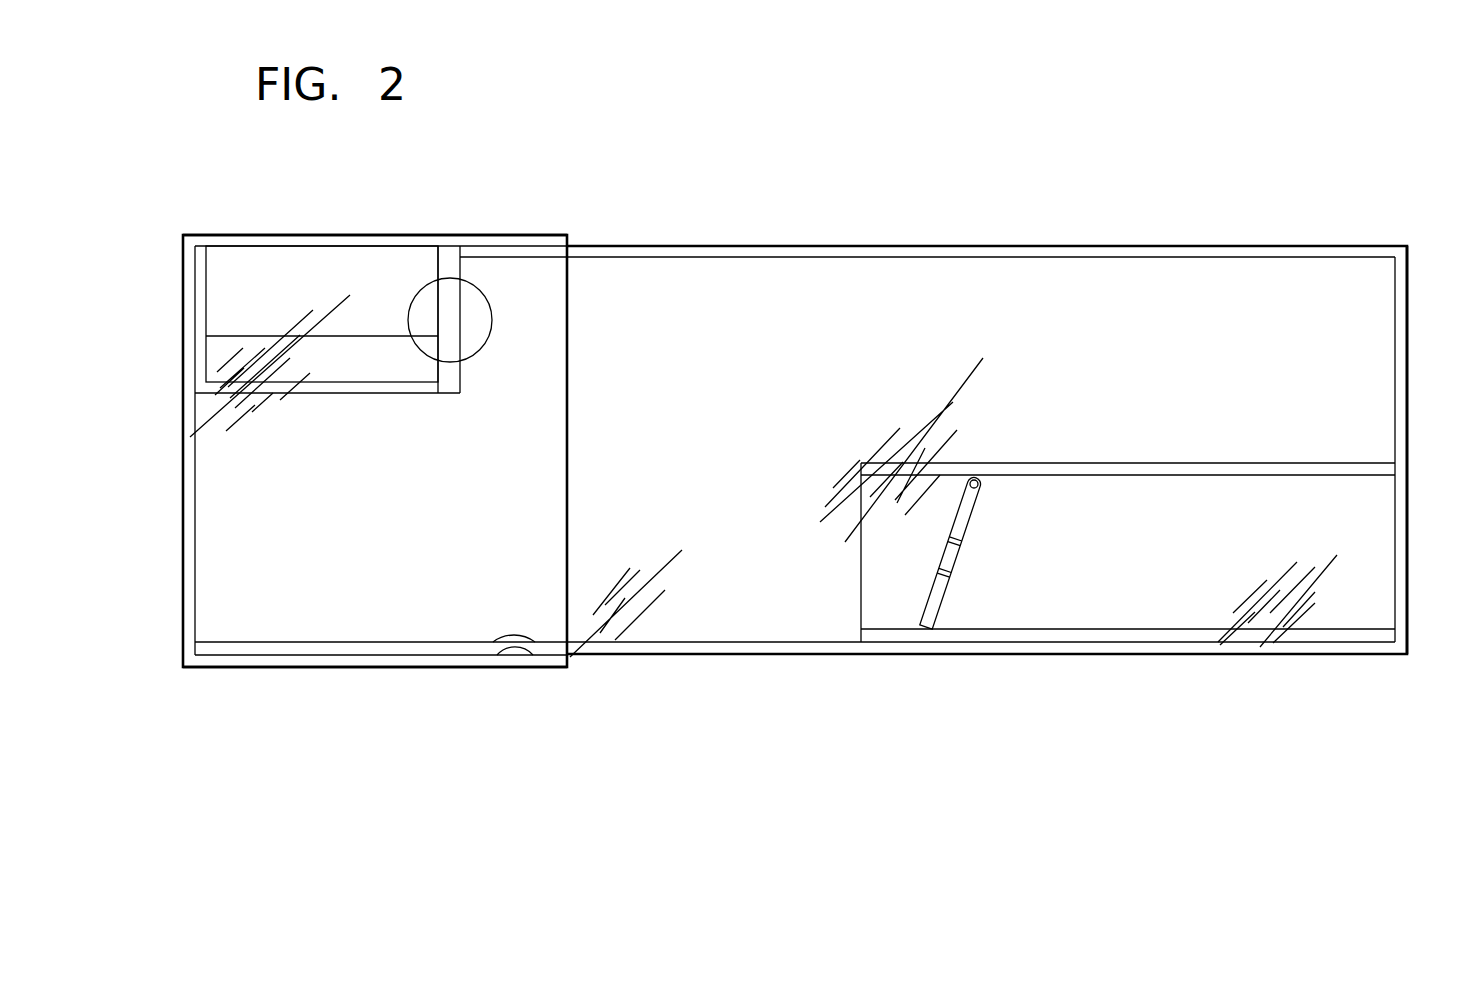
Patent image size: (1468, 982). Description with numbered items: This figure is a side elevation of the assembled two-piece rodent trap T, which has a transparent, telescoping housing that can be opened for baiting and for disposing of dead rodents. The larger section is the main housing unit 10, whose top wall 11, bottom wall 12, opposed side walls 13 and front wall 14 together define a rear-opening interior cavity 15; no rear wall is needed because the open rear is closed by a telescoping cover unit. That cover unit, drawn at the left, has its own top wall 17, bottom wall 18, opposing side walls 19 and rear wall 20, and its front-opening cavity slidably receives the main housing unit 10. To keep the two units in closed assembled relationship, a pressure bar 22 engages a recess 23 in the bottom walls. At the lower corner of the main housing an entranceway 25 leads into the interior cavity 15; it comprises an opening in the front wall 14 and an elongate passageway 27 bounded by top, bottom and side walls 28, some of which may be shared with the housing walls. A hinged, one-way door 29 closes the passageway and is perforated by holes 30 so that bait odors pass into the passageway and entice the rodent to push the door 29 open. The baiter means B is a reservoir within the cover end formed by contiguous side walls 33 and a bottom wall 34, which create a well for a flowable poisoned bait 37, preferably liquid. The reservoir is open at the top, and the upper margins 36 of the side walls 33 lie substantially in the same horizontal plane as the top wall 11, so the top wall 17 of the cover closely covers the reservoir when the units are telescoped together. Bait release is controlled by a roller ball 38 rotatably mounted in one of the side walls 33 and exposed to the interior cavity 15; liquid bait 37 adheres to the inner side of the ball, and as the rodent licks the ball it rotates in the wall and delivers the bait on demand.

The main housing unit 10 is at (308, 233).
The top wall 11 is at (1032, 245).
The bottom wall 12 is at (800, 655).
The side walls 13 is at (1190, 280).
The front wall 14 is at (1408, 388).
The interior cavity 15 is at (710, 607).
The top wall 17 is at (492, 233).
The bottom wall 18 is at (293, 667).
The side walls 19 is at (413, 531).
The rear wall 20 is at (182, 632).
The pressure bar 22 is at (510, 640).
The recess 23 is at (530, 638).
The entranceway 25 is at (1367, 595).
The passageway 27 is at (1353, 517).
The walls 28 is at (1125, 640).
The door 29 is at (950, 575).
The holes 30 is at (960, 543).
The side walls 33 is at (248, 275).
The bottom wall 34 is at (377, 390).
The upper margins 36 is at (448, 246).
The poisoned bait 37 is at (347, 363).
The roller ball 38 is at (490, 333).
The rodent trap T is at (723, 207).
The baiter means B is at (502, 278).